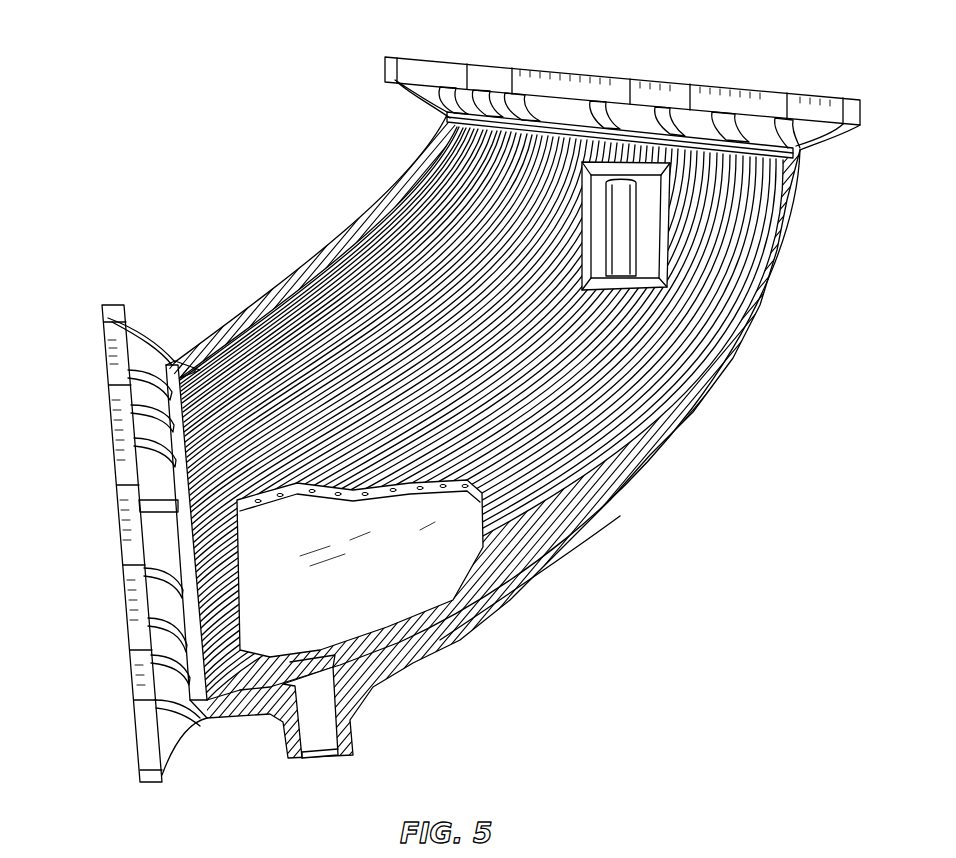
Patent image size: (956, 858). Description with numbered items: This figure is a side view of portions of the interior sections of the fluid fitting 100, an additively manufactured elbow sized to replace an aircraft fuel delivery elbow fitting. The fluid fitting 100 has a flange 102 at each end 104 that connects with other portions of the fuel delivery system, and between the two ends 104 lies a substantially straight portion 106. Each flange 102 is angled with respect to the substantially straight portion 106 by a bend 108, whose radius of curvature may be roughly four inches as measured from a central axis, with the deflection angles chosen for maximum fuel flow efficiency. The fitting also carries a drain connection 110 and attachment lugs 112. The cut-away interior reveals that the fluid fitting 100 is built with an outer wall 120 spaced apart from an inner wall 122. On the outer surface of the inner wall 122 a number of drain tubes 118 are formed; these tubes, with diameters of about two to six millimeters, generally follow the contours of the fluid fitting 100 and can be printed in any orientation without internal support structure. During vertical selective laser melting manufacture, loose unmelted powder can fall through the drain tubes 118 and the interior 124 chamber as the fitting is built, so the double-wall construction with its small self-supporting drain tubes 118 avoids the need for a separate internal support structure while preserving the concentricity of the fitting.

The fluid fitting 100 is at (222, 128).
The flange 102 is at (810, 96).
The end 104 is at (686, 45).
The substantially straight portion 106 is at (552, 522).
The bend 108 is at (428, 150).
The drain connection 110 is at (350, 727).
The attachment lug 112 is at (628, 290).
The drain tube 118 is at (557, 430).
The outer wall 120 is at (324, 262).
The inner wall 122 is at (715, 300).
The interior chamber 124 is at (356, 563).